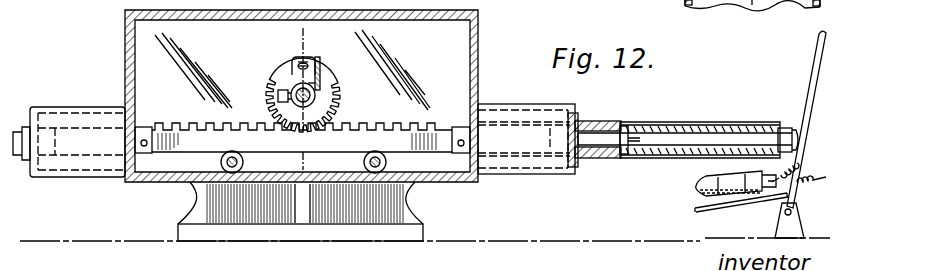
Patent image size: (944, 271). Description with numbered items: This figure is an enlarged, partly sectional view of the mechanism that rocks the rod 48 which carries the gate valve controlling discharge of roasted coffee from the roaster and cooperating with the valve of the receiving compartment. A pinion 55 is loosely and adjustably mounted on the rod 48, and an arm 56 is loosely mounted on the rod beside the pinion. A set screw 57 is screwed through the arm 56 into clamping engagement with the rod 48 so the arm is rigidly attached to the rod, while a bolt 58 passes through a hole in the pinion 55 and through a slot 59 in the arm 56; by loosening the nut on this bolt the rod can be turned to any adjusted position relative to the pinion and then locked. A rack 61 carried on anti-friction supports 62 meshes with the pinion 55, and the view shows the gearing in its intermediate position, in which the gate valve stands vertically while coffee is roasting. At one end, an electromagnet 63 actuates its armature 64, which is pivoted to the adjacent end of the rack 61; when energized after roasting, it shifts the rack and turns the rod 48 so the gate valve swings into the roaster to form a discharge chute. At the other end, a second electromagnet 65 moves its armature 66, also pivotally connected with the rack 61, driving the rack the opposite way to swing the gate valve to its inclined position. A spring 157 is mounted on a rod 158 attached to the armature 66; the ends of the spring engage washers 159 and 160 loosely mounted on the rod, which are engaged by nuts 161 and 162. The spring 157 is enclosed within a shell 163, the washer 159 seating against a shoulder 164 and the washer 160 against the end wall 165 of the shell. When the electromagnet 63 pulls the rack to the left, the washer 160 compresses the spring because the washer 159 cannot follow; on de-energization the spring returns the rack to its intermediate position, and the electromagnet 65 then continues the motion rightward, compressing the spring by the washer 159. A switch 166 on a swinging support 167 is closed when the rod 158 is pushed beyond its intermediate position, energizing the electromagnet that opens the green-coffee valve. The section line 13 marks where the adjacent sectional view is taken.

The section line 13 is at (288, 162).
The rod 48 is at (317, 96).
The pinion 55 is at (277, 81).
The arm 56 is at (320, 75).
The set screw 57 is at (278, 97).
The bolt 58 is at (296, 60).
The slot 59 is at (313, 67).
The rack 61 is at (356, 128).
The anti-friction supports 62 is at (386, 162).
The electromagnet 63 is at (88, 118).
The armature 64 is at (147, 128).
The electromagnet 65 is at (520, 110).
The armature 66 is at (459, 127).
The spring 157 is at (668, 122).
The rod 158 is at (655, 156).
The washer 159 is at (628, 125).
The washer 160 is at (781, 128).
The nut 161 is at (612, 158).
The nut 162 is at (797, 130).
The shell 163 is at (718, 122).
The shoulder 164 is at (622, 124).
The end wall 165 is at (798, 152).
The switch 166 is at (735, 197).
The swinging support 167 is at (814, 134).